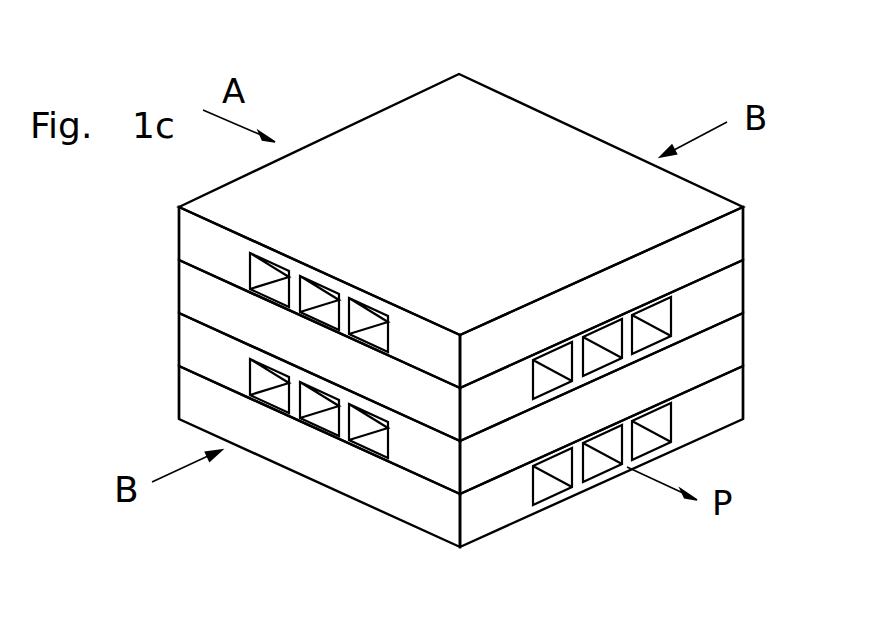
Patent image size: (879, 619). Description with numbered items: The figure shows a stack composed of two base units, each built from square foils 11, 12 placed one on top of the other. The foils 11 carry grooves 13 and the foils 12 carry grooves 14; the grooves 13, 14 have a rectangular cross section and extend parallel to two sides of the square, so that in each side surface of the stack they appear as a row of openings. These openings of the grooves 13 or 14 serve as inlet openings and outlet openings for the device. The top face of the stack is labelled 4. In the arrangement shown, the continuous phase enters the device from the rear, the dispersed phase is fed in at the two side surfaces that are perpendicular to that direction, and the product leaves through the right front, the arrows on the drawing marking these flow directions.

The laminated block body 4 is at (462, 220).
The square foil 11 is at (734, 241).
The square foil 12 is at (727, 295).
The grooves 13 is at (258, 271).
The grooves 14 is at (550, 488).